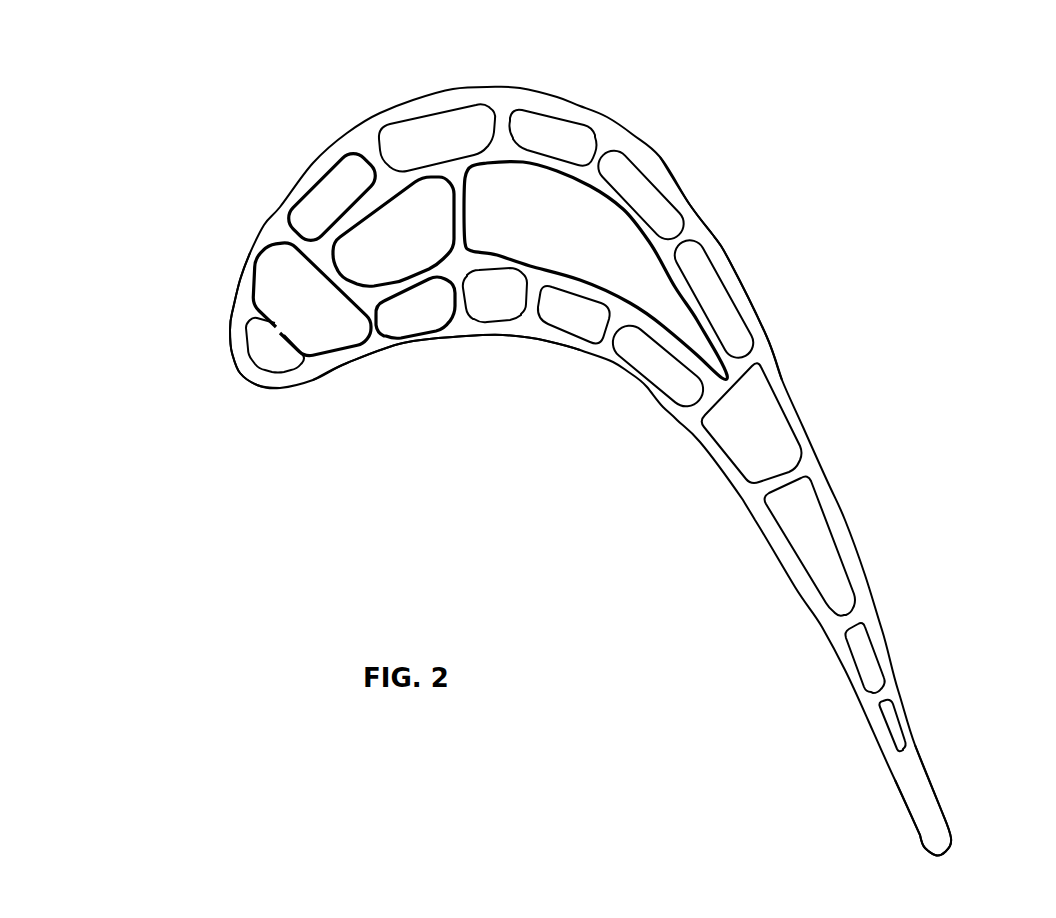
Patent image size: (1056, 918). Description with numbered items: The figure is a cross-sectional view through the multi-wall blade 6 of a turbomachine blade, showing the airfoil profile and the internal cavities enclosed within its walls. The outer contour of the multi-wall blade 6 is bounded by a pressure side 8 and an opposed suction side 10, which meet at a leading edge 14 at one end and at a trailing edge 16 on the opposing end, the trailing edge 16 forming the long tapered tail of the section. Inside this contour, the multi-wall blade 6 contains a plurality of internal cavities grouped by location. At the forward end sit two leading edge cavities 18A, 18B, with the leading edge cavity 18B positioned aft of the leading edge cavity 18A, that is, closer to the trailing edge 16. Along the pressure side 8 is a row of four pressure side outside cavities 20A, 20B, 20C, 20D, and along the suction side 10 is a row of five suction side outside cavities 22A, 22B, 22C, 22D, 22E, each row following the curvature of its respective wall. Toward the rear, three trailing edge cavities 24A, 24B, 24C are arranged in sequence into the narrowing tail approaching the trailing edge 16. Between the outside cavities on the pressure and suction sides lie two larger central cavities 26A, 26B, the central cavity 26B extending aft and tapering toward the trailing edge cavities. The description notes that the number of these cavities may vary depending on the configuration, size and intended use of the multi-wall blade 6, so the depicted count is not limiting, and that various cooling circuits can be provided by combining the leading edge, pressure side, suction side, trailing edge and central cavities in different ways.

The multi-wall blade 6 is at (822, 178).
The pressure side 8 is at (445, 429).
The suction side 10 is at (654, 90).
The leading edge 14 is at (235, 410).
The trailing edge 16 is at (960, 805).
The leading edge cavity 18A is at (246, 347).
The leading edge cavity 18B is at (286, 312).
The pressure side cavity 20A is at (423, 335).
The pressure side cavity 20B is at (503, 323).
The pressure side cavity 20C is at (570, 333).
The pressure side cavity 20D is at (663, 390).
The suction side cavity 22A is at (302, 196).
The suction side cavity 22B is at (420, 112).
The suction side cavity 22C is at (574, 124).
The suction side cavity 22D is at (653, 187).
The suction side cavity 22E is at (727, 287).
The trailing edge cavity 24A is at (787, 408).
The trailing edge cavity 24B is at (833, 533).
The trailing edge cavity 24C is at (873, 645).
The central cavity 26A is at (370, 255).
The central cavity 26B is at (543, 235).